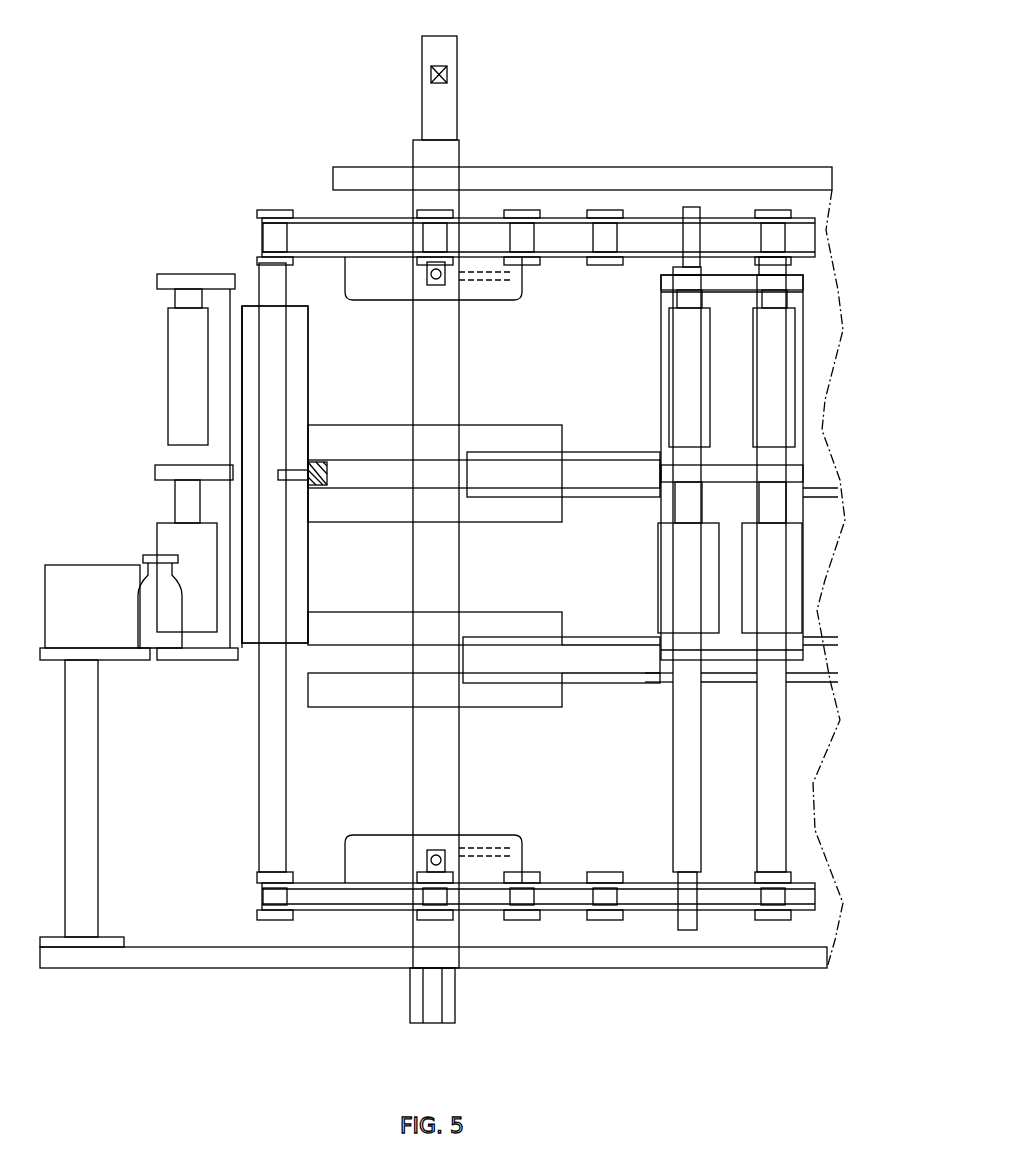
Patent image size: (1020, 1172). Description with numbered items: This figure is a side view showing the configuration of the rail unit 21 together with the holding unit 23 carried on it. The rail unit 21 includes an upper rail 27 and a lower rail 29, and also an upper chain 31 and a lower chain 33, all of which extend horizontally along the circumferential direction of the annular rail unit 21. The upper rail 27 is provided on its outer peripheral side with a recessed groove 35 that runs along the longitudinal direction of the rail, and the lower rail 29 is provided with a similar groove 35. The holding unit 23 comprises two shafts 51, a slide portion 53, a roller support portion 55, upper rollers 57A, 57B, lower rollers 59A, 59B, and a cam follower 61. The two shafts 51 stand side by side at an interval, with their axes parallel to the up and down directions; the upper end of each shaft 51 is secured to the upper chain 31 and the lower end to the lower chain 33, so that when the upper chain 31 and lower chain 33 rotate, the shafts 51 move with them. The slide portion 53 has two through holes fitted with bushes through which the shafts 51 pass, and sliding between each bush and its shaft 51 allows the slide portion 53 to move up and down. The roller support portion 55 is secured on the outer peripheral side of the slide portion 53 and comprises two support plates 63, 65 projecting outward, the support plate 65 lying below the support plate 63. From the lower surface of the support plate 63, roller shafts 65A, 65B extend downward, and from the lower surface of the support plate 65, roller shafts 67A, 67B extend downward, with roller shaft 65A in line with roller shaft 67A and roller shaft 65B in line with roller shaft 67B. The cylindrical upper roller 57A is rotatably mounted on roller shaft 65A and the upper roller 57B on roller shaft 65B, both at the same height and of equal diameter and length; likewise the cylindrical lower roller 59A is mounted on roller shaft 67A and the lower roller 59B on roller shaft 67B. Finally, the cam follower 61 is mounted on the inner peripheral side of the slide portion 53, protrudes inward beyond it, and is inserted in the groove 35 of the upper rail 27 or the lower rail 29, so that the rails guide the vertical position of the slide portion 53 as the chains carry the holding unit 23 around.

The rail unit 21 is at (585, 167).
The upper chain 31 is at (738, 240).
The lower chain 33 is at (643, 905).
The holding unit 23 is at (290, 572).
The slide portion 53 is at (288, 350).
The upper rail 27 is at (613, 468).
The groove 35 is at (592, 492).
The lower rail 29 is at (598, 662).
The cam follower 61 is at (318, 462).
The support plate 63 is at (205, 274).
The roller support portion 55 is at (157, 282).
The roller shaft 65B is at (185, 298).
The roller shaft 65A is at (663, 300).
The upper roller 57A is at (690, 352).
The upper roller 57B is at (183, 382).
The support plate 65 is at (165, 470).
The roller shaft 67A is at (678, 505).
The roller shaft 67B is at (183, 505).
The lower roller 59A is at (672, 580).
The lower roller 59B is at (170, 545).
The shaft 51 is at (687, 817).